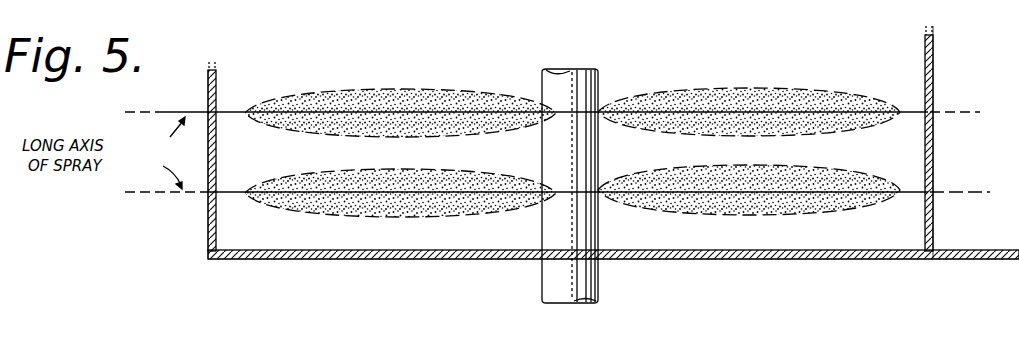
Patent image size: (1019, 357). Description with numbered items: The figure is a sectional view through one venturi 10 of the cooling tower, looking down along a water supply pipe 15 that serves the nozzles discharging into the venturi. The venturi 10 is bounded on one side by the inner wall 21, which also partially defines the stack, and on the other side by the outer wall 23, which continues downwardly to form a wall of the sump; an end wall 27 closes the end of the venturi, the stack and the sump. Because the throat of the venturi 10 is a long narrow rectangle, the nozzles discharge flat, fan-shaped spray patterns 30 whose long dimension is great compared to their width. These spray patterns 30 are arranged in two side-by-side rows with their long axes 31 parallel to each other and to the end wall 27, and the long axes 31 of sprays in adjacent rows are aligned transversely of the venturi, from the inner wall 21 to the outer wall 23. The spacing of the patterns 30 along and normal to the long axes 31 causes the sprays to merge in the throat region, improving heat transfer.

The venturi 10 is at (935, 151).
The water supply pipe 15 is at (553, 283).
The inner wall 21 is at (925, 62).
The outer wall 23 is at (217, 88).
The vertical end wall 27 is at (767, 259).
The spray pattern 30 is at (377, 91).
The long axis 31 is at (468, 110).